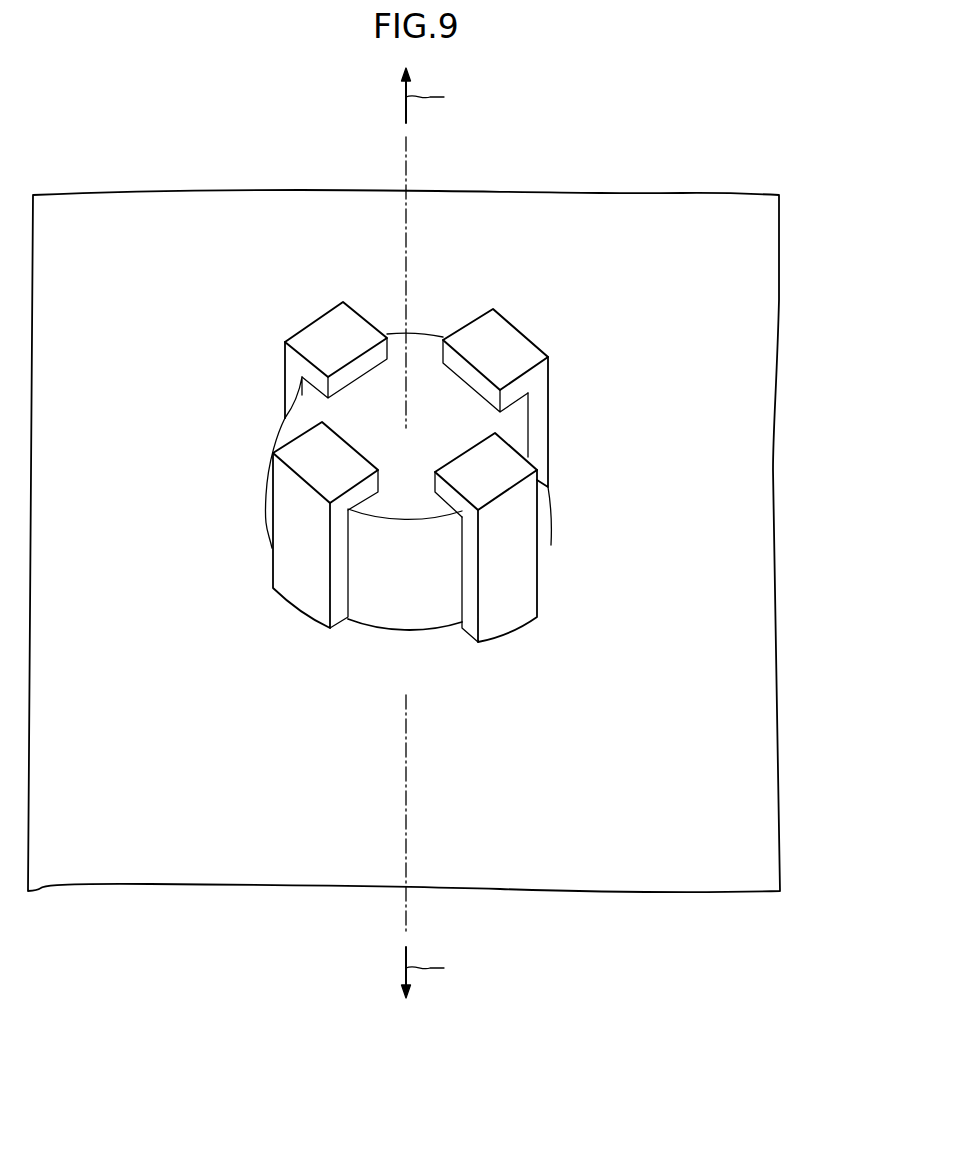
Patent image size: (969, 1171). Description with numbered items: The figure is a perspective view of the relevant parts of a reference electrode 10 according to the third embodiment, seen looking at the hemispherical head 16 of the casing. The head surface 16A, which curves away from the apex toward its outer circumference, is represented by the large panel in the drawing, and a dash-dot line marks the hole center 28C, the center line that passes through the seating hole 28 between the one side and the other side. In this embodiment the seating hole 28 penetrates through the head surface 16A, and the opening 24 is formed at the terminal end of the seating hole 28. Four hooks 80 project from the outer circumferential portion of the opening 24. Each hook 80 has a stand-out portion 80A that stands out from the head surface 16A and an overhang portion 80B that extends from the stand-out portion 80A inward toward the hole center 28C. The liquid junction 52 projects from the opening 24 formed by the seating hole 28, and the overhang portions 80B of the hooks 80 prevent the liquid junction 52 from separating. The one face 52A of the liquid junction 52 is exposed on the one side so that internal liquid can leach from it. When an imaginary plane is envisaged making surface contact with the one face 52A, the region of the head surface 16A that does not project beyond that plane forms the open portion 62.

The reference electrode 10 is at (453, 500).
The head 16 is at (453, 541).
The head surface 16A is at (737, 413).
The opening 24 is at (471, 526).
The seating hole 28 is at (432, 623).
The hole center 28C is at (406, 155).
The liquid junction 52 is at (513, 426).
The one face 52A is at (522, 437).
The open portion 62 is at (407, 529).
The hook 80 is at (407, 457).
The stand-out portion 80A is at (285, 376).
The overhang portion 80B is at (323, 334).